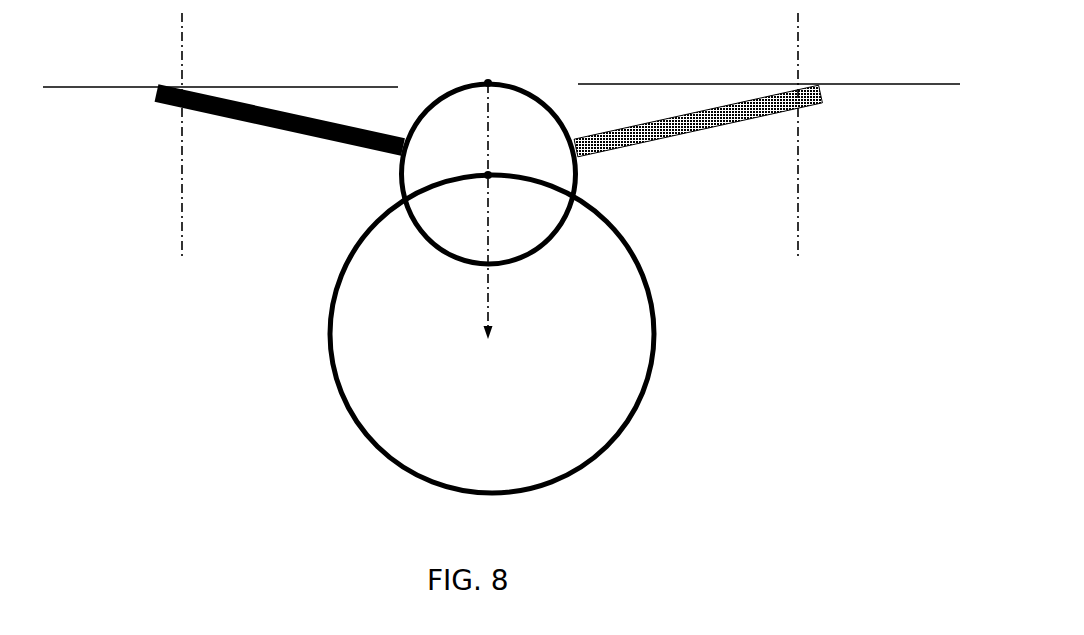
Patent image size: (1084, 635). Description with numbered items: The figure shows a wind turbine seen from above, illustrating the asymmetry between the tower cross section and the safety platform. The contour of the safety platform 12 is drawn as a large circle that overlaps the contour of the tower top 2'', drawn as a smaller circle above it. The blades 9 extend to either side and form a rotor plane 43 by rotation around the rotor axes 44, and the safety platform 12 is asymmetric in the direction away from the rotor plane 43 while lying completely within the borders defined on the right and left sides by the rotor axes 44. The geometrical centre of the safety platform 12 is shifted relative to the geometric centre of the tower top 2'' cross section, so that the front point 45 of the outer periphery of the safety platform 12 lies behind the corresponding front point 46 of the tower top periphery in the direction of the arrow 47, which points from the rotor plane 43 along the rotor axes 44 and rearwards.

The tower top 2'' is at (515, 148).
The rotor blade / wing 9 is at (241, 122).
The safety platform 12 is at (658, 333).
The rotor plane 43 is at (293, 85).
The rotor axis 44 is at (187, 237).
The front point of the outer periphery of the safety platform 45 is at (482, 170).
The front point of the periphery of the tower top cross section 46 is at (488, 82).
The arrow 47 is at (493, 305).